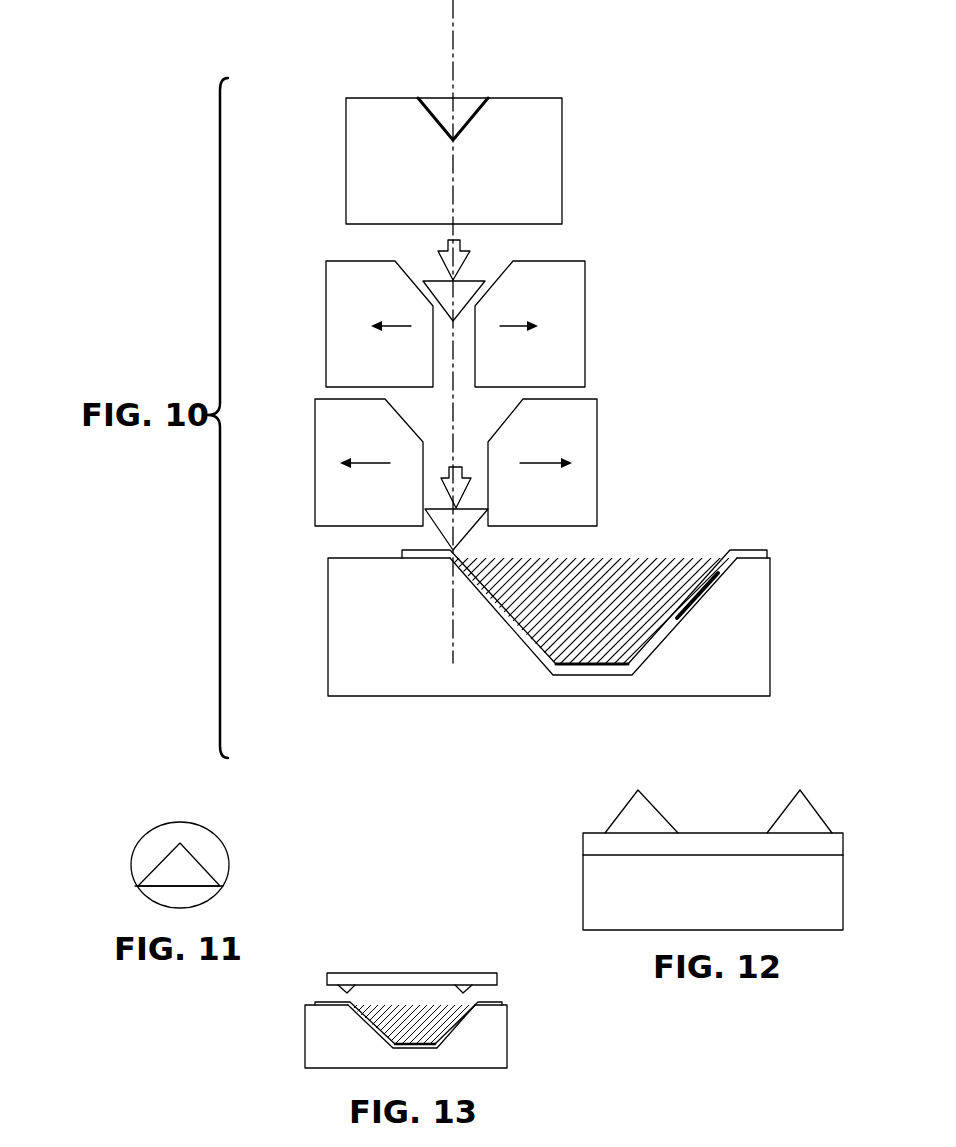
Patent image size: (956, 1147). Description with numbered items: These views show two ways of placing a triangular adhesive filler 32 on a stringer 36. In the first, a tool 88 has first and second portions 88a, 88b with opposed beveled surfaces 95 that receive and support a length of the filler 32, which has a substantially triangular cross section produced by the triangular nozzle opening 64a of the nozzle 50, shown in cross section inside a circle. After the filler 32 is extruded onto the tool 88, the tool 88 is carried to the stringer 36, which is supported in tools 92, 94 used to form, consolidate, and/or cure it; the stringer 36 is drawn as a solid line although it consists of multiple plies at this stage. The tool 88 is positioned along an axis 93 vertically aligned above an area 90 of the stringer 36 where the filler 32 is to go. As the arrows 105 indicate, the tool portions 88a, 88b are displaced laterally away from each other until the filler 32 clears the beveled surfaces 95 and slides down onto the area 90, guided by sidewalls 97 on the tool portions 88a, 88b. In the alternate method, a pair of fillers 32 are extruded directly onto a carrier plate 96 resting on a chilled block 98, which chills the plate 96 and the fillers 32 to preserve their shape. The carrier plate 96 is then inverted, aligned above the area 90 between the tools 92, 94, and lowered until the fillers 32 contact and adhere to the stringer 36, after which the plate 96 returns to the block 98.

In FIG. 10, the adhesive filler 32 is at (435, 103).
In FIG. 11, the adhesive filler 32 is at (187, 862).
In FIG. 12, the adhesive filler 32 is at (648, 814).
In FIG. 13, the adhesive filler 32 is at (340, 990).
In FIG. 10, the stringer 36 is at (677, 618).
In FIG. 13, the stringer 36 is at (363, 1027).
In FIG. 11, the nozzle 50 is at (147, 852).
In FIG. 11, the nozzle opening 64a is at (133, 888).
In FIG. 10, the tool 88 is at (580, 166).
In FIG. 10, the first tool portion 88a is at (383, 173).
In FIG. 10, the second tool portion 88b is at (540, 133).
In FIG. 10, the area 90 is at (448, 563).
In FIG. 13, the area 90 is at (335, 1012).
In FIG. 10, the tool 92 is at (648, 573).
In FIG. 13, the tool 92 is at (427, 1027).
In FIG. 10, the axis 93 is at (454, 33).
In FIG. 10, the tool 94 is at (357, 658).
In FIG. 13, the tool 94 is at (325, 1047).
In FIG. 10, the beveled surfaces 95 is at (478, 125).
In FIG. 12, the carrier plate 96 is at (595, 845).
In FIG. 13, the carrier plate 96 is at (425, 981).
In FIG. 10, the sidewalls 97 is at (478, 465).
In FIG. 12, the chilled block 98 is at (610, 890).
In FIG. 10, the arrows 105 is at (395, 328).